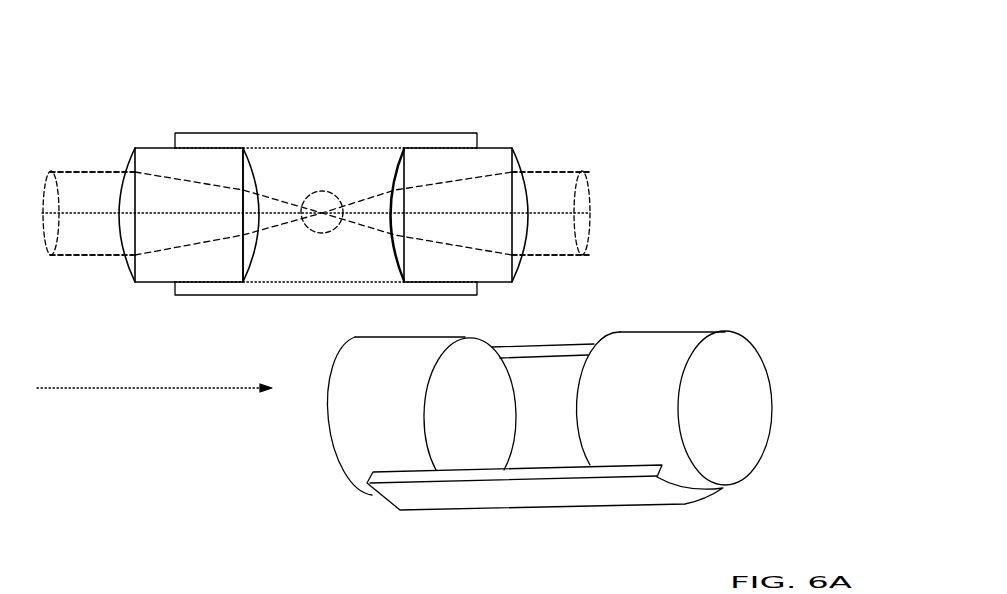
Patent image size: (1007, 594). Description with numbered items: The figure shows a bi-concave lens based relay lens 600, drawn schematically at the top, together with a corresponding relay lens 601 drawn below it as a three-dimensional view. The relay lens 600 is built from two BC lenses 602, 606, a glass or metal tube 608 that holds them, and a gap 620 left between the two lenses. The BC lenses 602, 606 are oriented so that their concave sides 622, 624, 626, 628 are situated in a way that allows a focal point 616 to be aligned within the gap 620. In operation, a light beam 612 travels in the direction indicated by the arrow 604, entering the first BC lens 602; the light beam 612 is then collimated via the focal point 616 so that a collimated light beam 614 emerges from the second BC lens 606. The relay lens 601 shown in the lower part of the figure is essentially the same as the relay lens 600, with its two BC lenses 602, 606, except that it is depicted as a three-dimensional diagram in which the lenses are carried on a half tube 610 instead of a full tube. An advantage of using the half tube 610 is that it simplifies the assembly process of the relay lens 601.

The relay lens 600 is at (582, 94).
The relay lens 601 is at (702, 312).
The BC lens 602 is at (233, 273).
The arrow 604 is at (154, 399).
The BC lens 606 is at (453, 273).
The glass or metal tube 608 is at (405, 133).
The half tube 610 is at (545, 503).
The light beam 612 is at (63, 268).
The collimated light beam 614 is at (572, 265).
The focal point 616 is at (331, 234).
The gap 620 is at (313, 268).
The concave side 622 is at (130, 153).
The concave side 624 is at (247, 147).
The concave side 626 is at (395, 160).
The concave side 628 is at (520, 163).